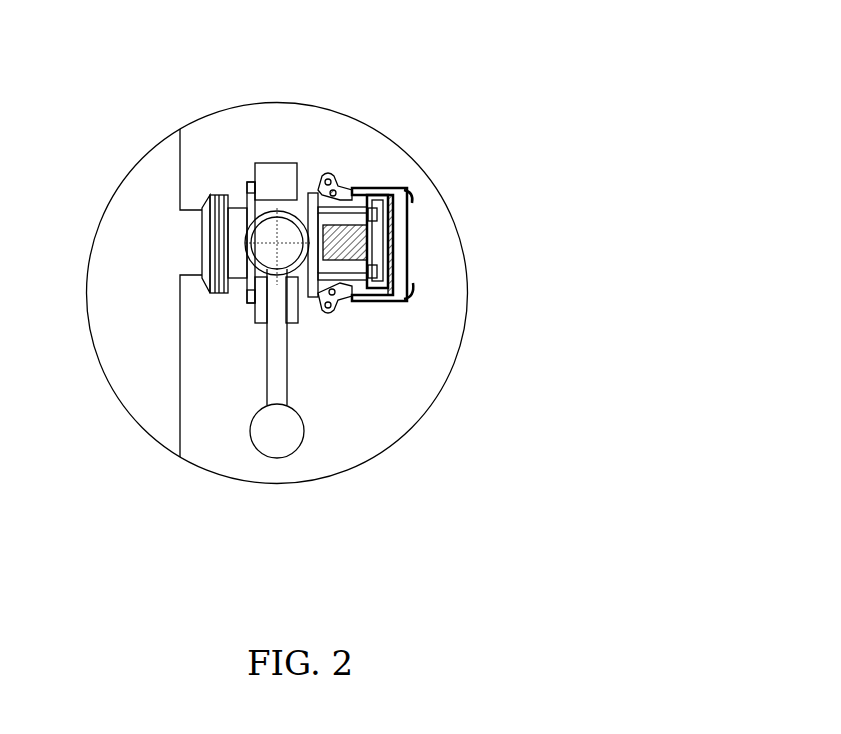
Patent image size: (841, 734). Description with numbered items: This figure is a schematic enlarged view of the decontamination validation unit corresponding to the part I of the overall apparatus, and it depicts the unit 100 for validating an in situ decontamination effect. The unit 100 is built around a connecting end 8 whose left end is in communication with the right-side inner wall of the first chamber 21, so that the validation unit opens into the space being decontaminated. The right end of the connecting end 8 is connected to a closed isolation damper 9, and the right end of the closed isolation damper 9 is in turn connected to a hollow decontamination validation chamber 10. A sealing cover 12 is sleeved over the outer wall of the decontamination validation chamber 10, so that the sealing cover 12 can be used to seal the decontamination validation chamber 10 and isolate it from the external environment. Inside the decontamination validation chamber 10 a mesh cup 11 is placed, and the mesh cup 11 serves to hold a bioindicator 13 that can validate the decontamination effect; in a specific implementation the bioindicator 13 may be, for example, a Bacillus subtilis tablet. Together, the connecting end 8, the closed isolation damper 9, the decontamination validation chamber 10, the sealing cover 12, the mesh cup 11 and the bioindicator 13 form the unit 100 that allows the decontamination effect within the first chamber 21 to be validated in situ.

The connecting end 8 is at (207, 193).
The closed isolation damper 9 is at (272, 240).
The decontamination validation chamber 10 is at (341, 283).
The mesh cup 11 is at (352, 202).
The sealing cover 12 is at (395, 243).
The bioindicator 13 is at (407, 297).
The first chamber 21 is at (155, 247).
The unit for validating an in situ decontamination effect 100 is at (513, 208).
The part I is at (313, 480).